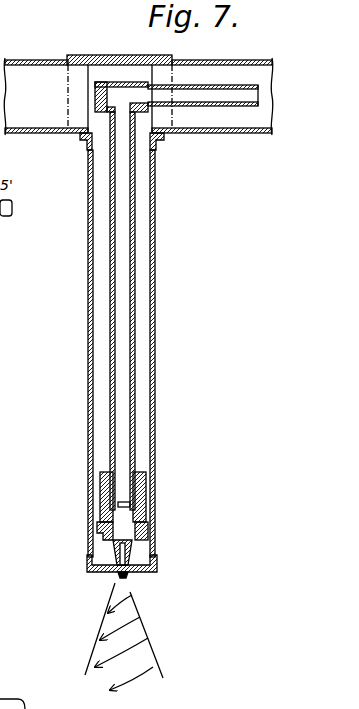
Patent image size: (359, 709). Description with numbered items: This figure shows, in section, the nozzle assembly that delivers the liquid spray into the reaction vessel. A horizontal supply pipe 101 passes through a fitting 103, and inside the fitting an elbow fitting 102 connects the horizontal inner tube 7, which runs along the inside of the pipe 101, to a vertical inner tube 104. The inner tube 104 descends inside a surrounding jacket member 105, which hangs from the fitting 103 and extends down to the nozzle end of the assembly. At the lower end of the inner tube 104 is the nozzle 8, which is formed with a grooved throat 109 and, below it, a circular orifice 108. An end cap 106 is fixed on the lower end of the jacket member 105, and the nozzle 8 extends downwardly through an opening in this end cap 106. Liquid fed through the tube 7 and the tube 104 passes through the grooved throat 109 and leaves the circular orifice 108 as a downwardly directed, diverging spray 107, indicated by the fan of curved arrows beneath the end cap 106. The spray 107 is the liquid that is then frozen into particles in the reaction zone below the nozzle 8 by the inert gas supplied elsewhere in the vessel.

The pipe 101 is at (50, 60).
The T-fitting 103 is at (97, 56).
The elbow fitting 102 is at (124, 82).
The inner tube 7 is at (228, 107).
The jacket member 105 is at (155, 225).
The inner vertical tube 104 is at (134, 292).
The nozzle 8 is at (147, 524).
The grooved throat 109 is at (134, 562).
The end cap 106 is at (88, 565).
The circular orifice 108 is at (123, 578).
The spray 107 is at (130, 615).